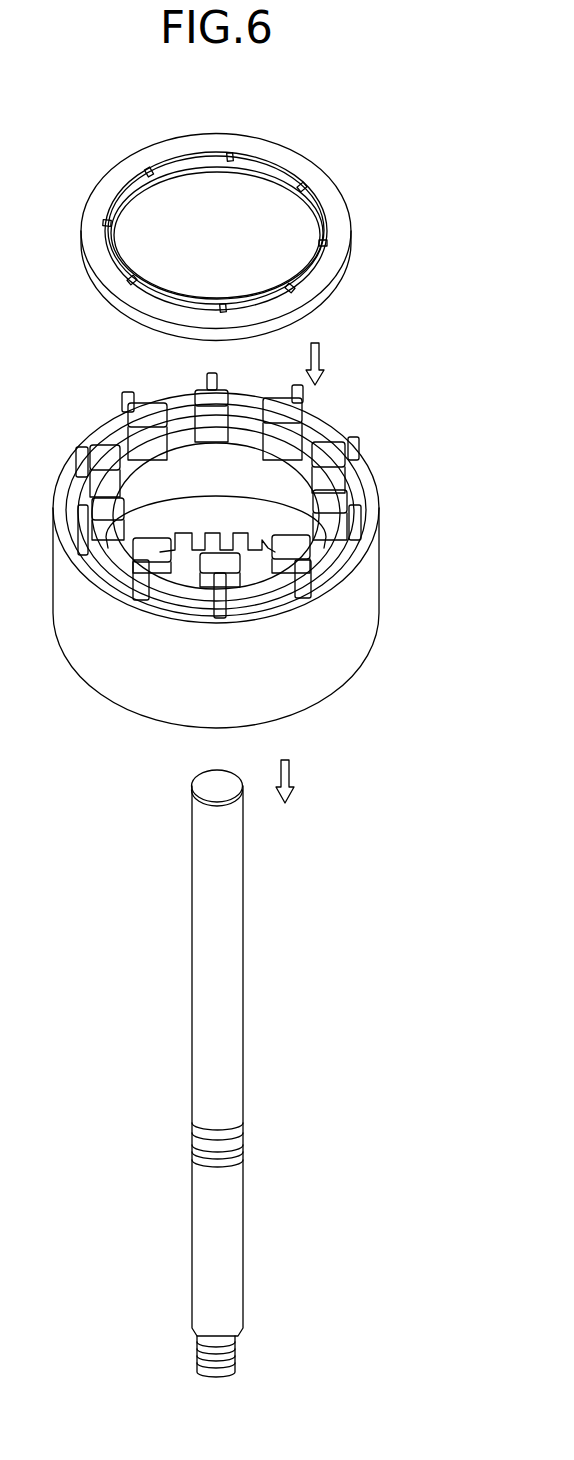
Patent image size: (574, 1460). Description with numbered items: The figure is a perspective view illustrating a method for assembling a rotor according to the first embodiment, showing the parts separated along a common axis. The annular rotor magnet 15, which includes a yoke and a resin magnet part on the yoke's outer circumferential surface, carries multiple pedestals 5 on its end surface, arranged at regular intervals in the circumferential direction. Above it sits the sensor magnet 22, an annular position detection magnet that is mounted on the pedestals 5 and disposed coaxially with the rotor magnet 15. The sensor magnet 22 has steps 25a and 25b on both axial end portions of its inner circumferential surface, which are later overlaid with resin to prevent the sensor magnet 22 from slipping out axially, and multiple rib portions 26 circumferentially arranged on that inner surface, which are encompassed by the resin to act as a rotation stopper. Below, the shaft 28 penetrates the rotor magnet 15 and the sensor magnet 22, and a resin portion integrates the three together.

The sensor magnet 22 is at (338, 216).
The step 25a is at (197, 156).
The step 25b is at (196, 170).
The rib portion 26 is at (149, 172).
The rotor magnet 15 is at (358, 609).
The pedestal 5 is at (326, 455).
The shaft 28 is at (228, 1010).